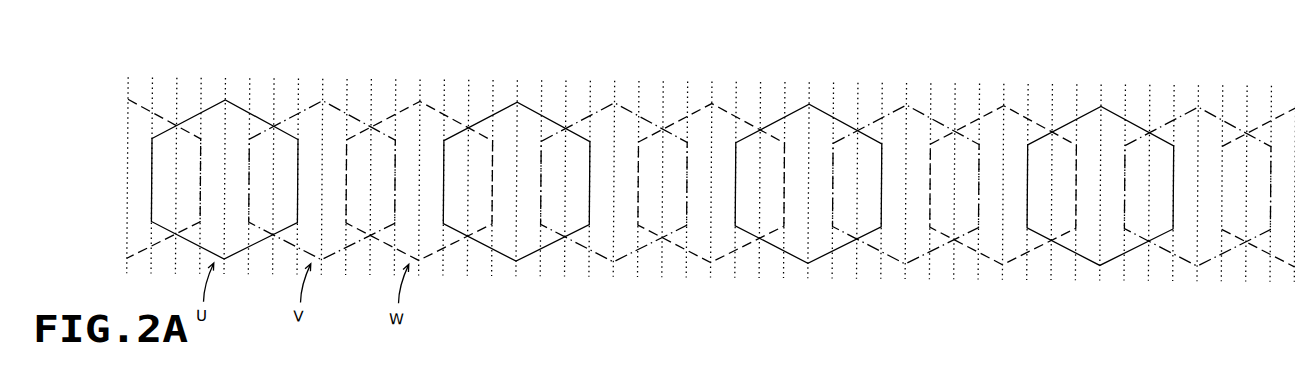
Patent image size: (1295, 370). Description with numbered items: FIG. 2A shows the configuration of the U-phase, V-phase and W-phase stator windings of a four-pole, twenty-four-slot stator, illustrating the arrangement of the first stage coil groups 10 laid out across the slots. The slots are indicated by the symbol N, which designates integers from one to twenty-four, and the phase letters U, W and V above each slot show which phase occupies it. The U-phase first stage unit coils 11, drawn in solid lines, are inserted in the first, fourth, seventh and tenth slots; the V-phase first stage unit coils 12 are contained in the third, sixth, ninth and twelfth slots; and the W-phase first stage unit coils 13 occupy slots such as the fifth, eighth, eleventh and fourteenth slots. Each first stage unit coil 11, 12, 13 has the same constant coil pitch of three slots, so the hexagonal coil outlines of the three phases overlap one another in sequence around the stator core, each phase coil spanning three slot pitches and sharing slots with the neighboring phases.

The stator winding 10 is at (677, 185).
The U-phase first stage unit coil 11 is at (1113, 260).
The V-phase first stage unit coil 12 is at (1210, 260).
The W-phase first stage unit coil 13 is at (1290, 262).